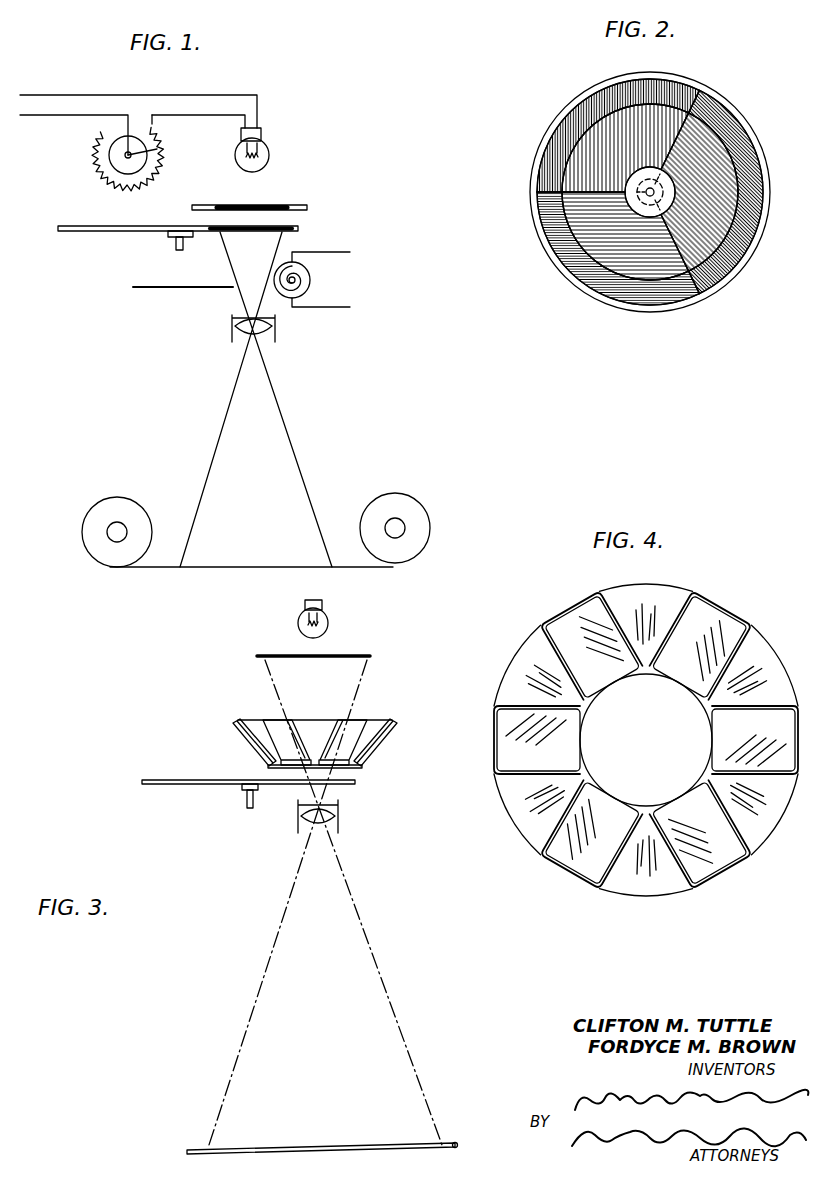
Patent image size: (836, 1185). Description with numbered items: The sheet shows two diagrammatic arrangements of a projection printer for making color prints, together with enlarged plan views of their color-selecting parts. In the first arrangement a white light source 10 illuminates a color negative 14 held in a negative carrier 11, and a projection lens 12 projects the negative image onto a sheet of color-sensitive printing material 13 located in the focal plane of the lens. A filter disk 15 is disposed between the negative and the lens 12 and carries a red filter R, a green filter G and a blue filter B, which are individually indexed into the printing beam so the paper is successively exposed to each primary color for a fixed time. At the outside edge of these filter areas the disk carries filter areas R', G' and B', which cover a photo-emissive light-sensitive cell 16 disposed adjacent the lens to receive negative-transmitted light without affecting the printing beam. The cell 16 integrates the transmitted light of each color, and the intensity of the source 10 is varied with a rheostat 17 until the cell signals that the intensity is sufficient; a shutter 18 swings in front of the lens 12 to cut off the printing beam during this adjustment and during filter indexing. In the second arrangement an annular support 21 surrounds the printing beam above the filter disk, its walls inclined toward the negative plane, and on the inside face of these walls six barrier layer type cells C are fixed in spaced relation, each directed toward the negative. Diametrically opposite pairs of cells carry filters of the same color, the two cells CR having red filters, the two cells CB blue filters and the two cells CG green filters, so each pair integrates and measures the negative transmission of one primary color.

In FIG. 1, the white light source 10 is at (269, 148).
In FIG. 3, the white light source 10 is at (329, 623).
In FIG. 1, the negative carrier 11 is at (269, 193).
In FIG. 1, the projection lens 12 is at (276, 330).
In FIG. 3, the projection lens 12 is at (340, 820).
In FIG. 1, the color-sensitive printing material 13 is at (340, 563).
In FIG. 3, the color-sensitive printing material 13 is at (455, 1143).
In FIG. 1, the color negative 14 is at (281, 205).
In FIG. 3, the color negative 14 is at (372, 656).
In FIG. 1, the filter disk 15 is at (93, 233).
In FIG. 2, the filter disk 15 is at (537, 162).
In FIG. 3, the filter disk 15 is at (148, 785).
In FIG. 1, the light-sensitive cell 16 is at (311, 280).
In FIG. 1, the rheostat 17 is at (166, 160).
In FIG. 1, the shutter 18 is at (143, 290).
In FIG. 3, the annular support 21 is at (320, 733).
In FIG. 4, the annular support 21 is at (527, 833).
In FIG. 3, the barrier layer type cell C is at (360, 722).
In FIG. 4, the barrier layer type cell C is at (728, 636).
In FIG. 4, the blue-filtered cell CB is at (646, 739).
In FIG. 4, the red-filtered cell CR is at (670, 761).
In FIG. 4, the green-filtered cell CG is at (646, 740).
In FIG. 2, the red filter R is at (625, 119).
In FIG. 2, the red cell filter R' is at (621, 119).
In FIG. 2, the green filter G is at (728, 192).
In FIG. 2, the green cell filter G' is at (741, 191).
In FIG. 2, the blue filter B is at (610, 239).
In FIG. 2, the blue cell filter B' is at (618, 258).